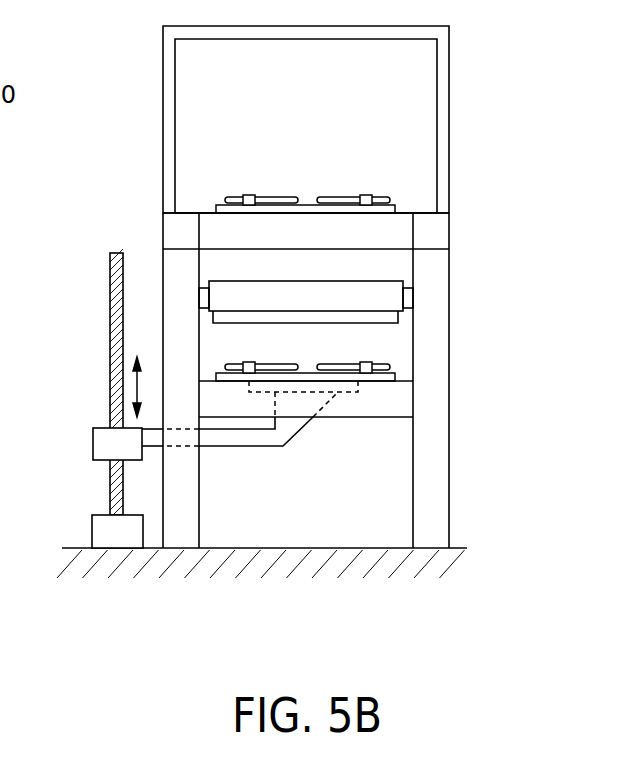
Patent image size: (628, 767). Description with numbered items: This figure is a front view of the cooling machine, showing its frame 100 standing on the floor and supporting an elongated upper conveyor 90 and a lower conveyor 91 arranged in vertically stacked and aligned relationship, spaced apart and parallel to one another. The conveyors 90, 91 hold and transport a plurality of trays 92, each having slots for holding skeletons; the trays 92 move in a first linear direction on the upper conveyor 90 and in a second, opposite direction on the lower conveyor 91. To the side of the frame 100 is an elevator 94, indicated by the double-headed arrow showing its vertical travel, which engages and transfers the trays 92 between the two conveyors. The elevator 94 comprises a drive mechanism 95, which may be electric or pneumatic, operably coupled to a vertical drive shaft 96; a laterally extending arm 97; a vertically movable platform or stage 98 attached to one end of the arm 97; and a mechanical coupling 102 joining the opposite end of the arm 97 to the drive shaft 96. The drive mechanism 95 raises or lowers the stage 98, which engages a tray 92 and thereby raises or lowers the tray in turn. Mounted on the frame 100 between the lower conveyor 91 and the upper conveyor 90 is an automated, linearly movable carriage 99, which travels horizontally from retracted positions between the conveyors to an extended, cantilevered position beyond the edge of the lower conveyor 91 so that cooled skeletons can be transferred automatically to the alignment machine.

The upper conveyor 90 is at (395, 233).
The lower conveyor 91 is at (398, 395).
The tray 92 is at (308, 192).
The elevator 94 is at (70, 386).
The drive mechanism 95 is at (92, 537).
The vertical drive shaft 96 is at (110, 313).
The arm 97 is at (251, 448).
The stage 98 is at (349, 393).
The carriage 99 is at (276, 297).
The frame 100 is at (450, 484).
The mechanical coupling 102 is at (93, 444).